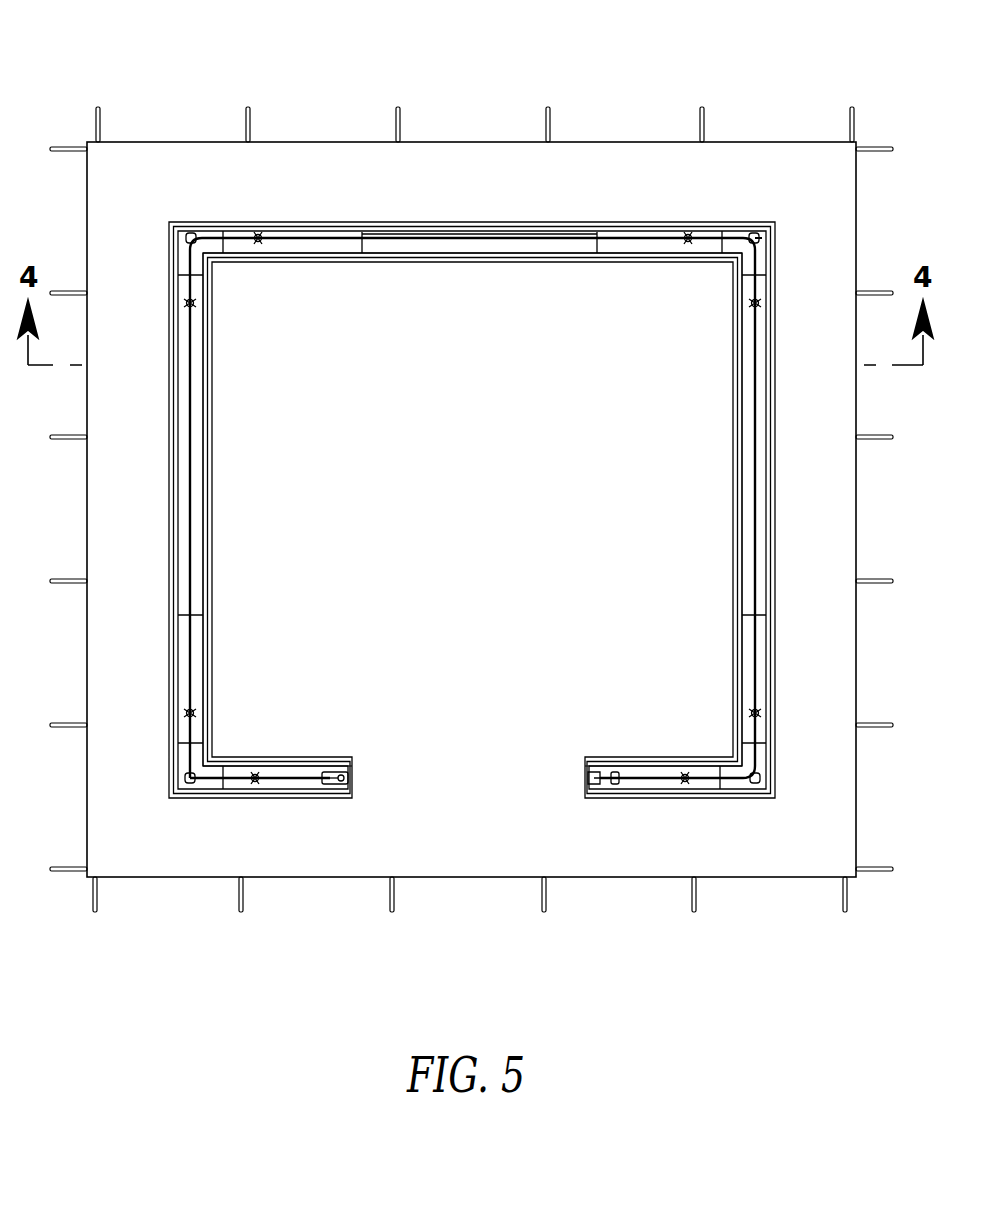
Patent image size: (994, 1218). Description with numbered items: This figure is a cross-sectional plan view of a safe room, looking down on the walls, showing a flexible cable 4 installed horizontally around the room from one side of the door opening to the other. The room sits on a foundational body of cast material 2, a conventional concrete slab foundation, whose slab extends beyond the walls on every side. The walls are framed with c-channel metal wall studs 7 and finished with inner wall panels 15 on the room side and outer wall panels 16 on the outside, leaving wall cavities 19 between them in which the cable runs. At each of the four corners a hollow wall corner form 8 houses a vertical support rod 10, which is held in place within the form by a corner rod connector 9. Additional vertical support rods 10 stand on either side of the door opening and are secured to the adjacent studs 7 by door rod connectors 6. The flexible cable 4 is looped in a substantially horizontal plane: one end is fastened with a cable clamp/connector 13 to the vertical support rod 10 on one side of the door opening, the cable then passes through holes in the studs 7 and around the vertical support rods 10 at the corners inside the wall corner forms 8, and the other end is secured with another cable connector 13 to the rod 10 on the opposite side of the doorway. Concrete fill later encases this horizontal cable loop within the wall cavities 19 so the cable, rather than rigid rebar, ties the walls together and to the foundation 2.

The foundational body of cast material 2 is at (130, 183).
The flexible cable 4 is at (628, 236).
The door rod connector 6 is at (338, 780).
The c-channel metal wall stud 7 is at (384, 232).
The wall corner form 8 is at (722, 250).
The corner rod connector 9 is at (197, 240).
The vertical support rod 10 is at (757, 240).
The cable clamp/connector 13 is at (687, 238).
The inner wall panel 15 is at (512, 258).
The outer wall panel 16 is at (464, 225).
The wall cavity 19 is at (340, 248).